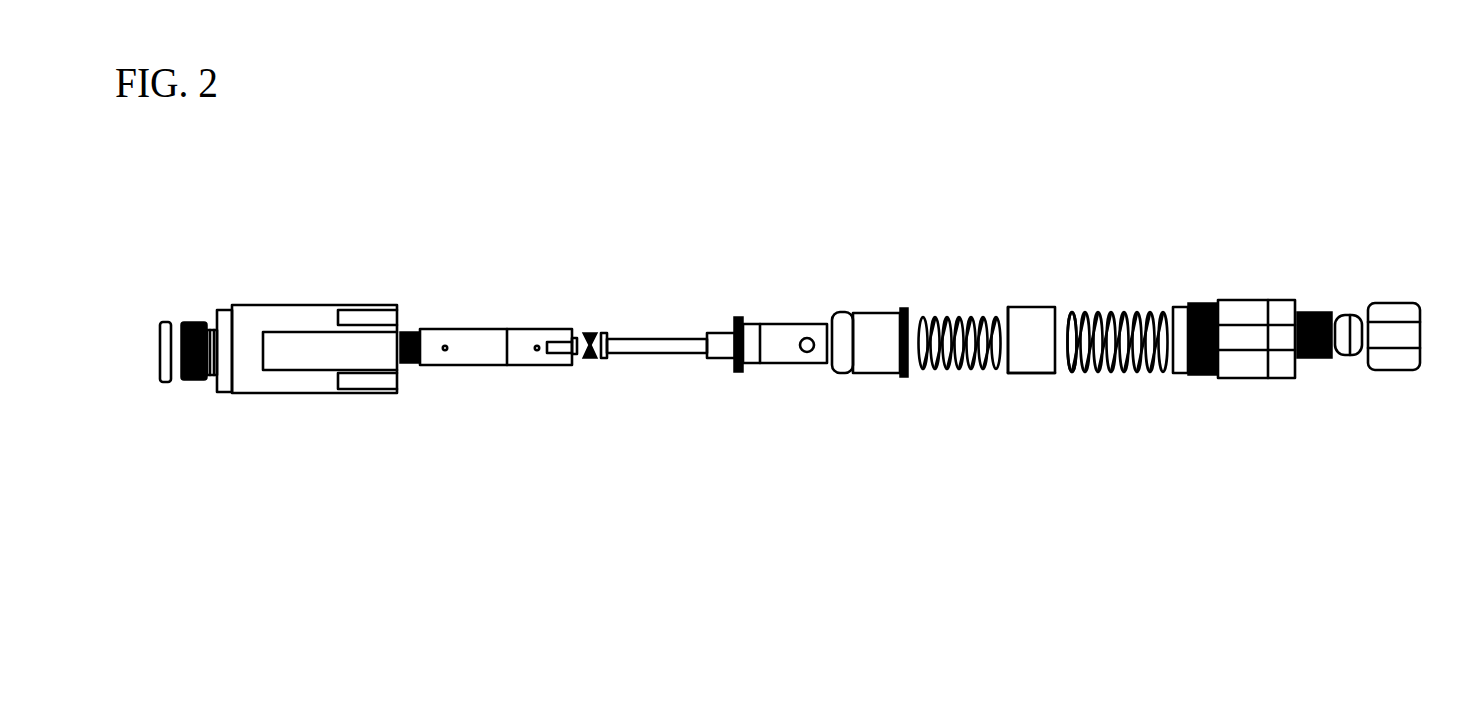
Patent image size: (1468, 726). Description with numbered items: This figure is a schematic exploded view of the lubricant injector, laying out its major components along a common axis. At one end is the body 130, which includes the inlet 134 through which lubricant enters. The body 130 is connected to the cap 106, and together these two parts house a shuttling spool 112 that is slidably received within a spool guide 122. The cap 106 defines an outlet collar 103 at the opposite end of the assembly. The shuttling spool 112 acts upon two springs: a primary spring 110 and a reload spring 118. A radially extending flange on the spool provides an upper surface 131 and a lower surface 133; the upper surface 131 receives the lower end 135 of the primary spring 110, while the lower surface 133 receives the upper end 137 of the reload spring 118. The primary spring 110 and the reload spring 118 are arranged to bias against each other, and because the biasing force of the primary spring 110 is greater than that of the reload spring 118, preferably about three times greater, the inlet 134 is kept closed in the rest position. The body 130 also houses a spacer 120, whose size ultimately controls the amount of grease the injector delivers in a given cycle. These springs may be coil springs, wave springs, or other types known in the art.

The outlet collar 103 is at (1382, 315).
The cap 106 is at (1240, 307).
The primary spring 110 is at (1112, 315).
The shuttling spool 112 is at (782, 345).
The reload spring 118 is at (940, 320).
The spacer 120 is at (1030, 345).
The spool guide 122 is at (467, 347).
The body 130 is at (272, 320).
The upper surface 131 is at (745, 367).
The lower surface 133 is at (737, 372).
The inlet 134 is at (190, 380).
The lower end 135 is at (1073, 370).
The upper end 137 is at (998, 367).